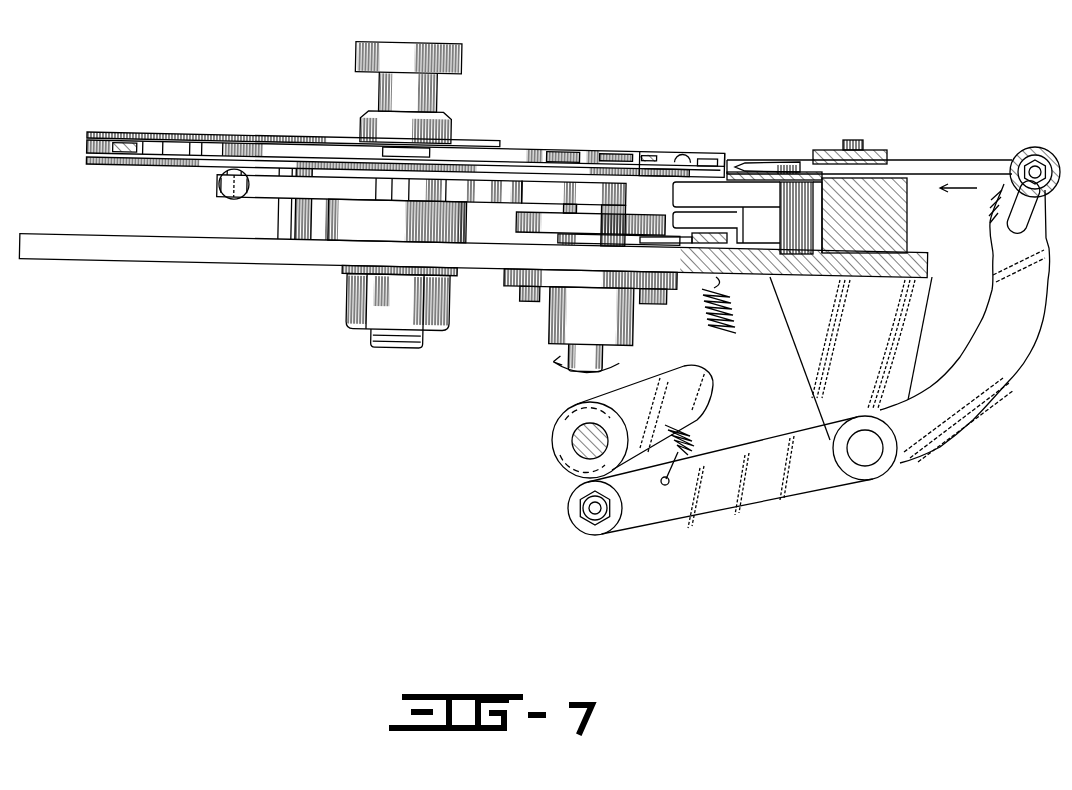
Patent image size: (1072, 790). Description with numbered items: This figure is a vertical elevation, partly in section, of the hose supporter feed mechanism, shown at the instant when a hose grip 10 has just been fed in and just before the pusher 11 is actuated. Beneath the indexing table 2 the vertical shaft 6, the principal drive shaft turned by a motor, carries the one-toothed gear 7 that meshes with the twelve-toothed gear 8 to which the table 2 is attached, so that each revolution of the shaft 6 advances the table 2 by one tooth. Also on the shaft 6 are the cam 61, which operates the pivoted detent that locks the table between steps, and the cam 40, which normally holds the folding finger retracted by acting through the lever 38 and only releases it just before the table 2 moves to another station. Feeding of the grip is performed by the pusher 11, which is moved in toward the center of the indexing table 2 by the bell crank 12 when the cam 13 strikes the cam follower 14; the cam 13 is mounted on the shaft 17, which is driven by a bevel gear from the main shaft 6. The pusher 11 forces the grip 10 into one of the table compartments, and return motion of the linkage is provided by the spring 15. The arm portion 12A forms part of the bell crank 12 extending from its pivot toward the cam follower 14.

The indexing table 2 is at (504, 150).
The grip 10 is at (692, 162).
The pusher 11 is at (950, 168).
The one-toothed gear 7 is at (531, 191).
The cam 61 is at (635, 216).
The twelve-toothed gear 8 is at (403, 200).
The cam 40 is at (558, 238).
The lever 38 is at (728, 239).
The vertical shaft 6 is at (608, 357).
The cam 13 is at (700, 384).
The spring 15 is at (693, 434).
The shaft 17 is at (568, 445).
The cam follower 14 is at (570, 509).
The bell crank 12 is at (1012, 379).
The arm portion 12A is at (771, 503).